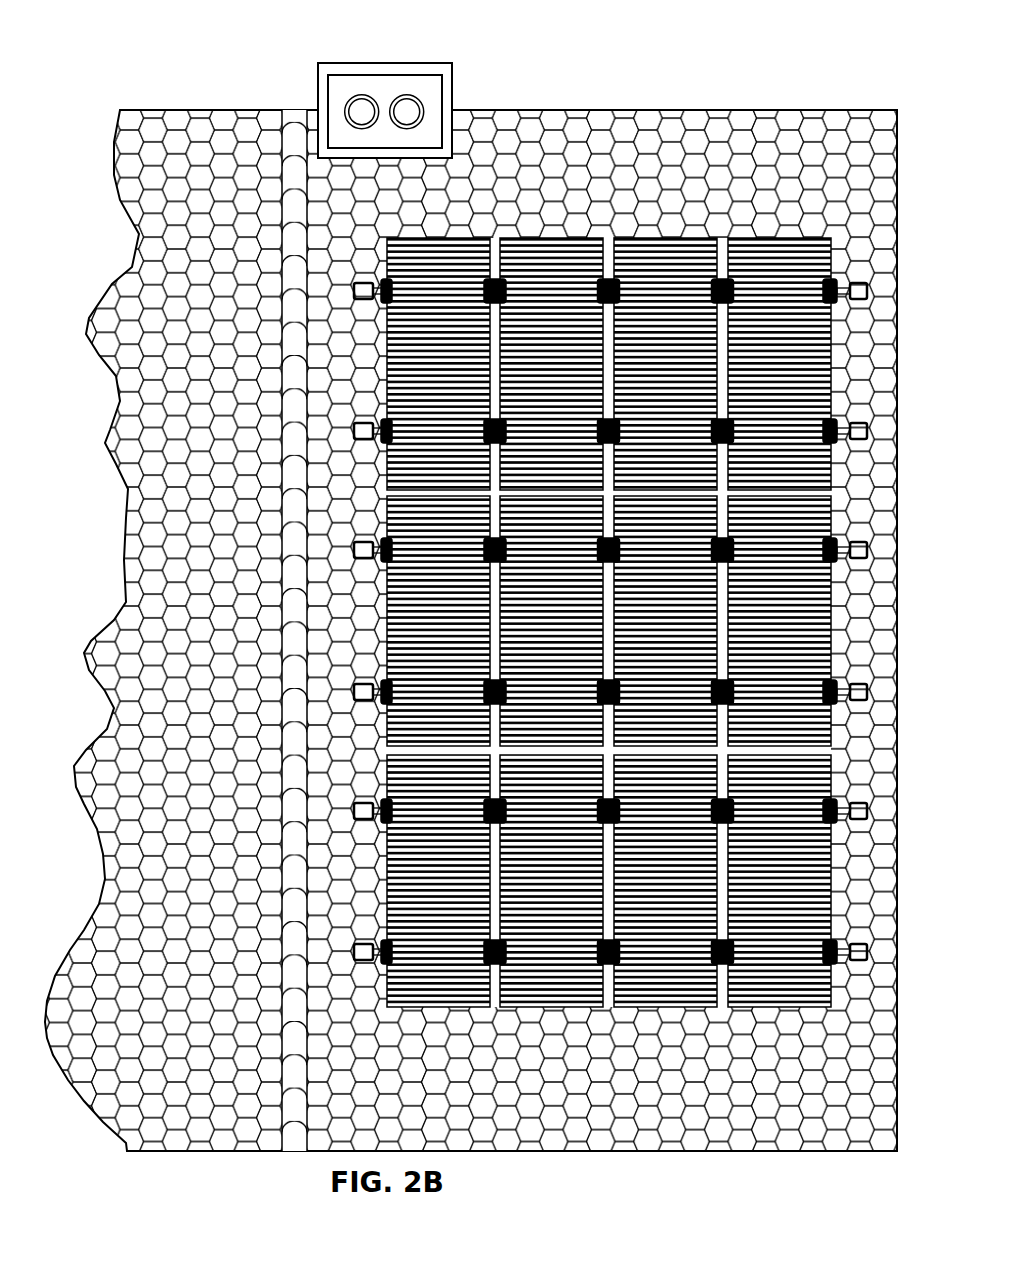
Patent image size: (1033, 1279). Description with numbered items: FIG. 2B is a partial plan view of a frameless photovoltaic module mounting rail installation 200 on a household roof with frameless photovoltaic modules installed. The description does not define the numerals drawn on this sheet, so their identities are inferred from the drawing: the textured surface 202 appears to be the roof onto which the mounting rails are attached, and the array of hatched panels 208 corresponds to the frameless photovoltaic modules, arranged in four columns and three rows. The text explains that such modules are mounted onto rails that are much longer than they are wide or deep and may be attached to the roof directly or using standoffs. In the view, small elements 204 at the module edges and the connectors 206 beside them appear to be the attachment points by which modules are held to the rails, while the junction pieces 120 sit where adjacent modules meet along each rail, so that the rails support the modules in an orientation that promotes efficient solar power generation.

The solar panel assembly 200 is at (471, 604).
The flexible substrate 202 is at (555, 135).
The edge tab 204 is at (380, 419).
The electrical connector 206 is at (352, 441).
The solar cell modules 208 is at (667, 268).
The junction connectors 120 is at (830, 285).